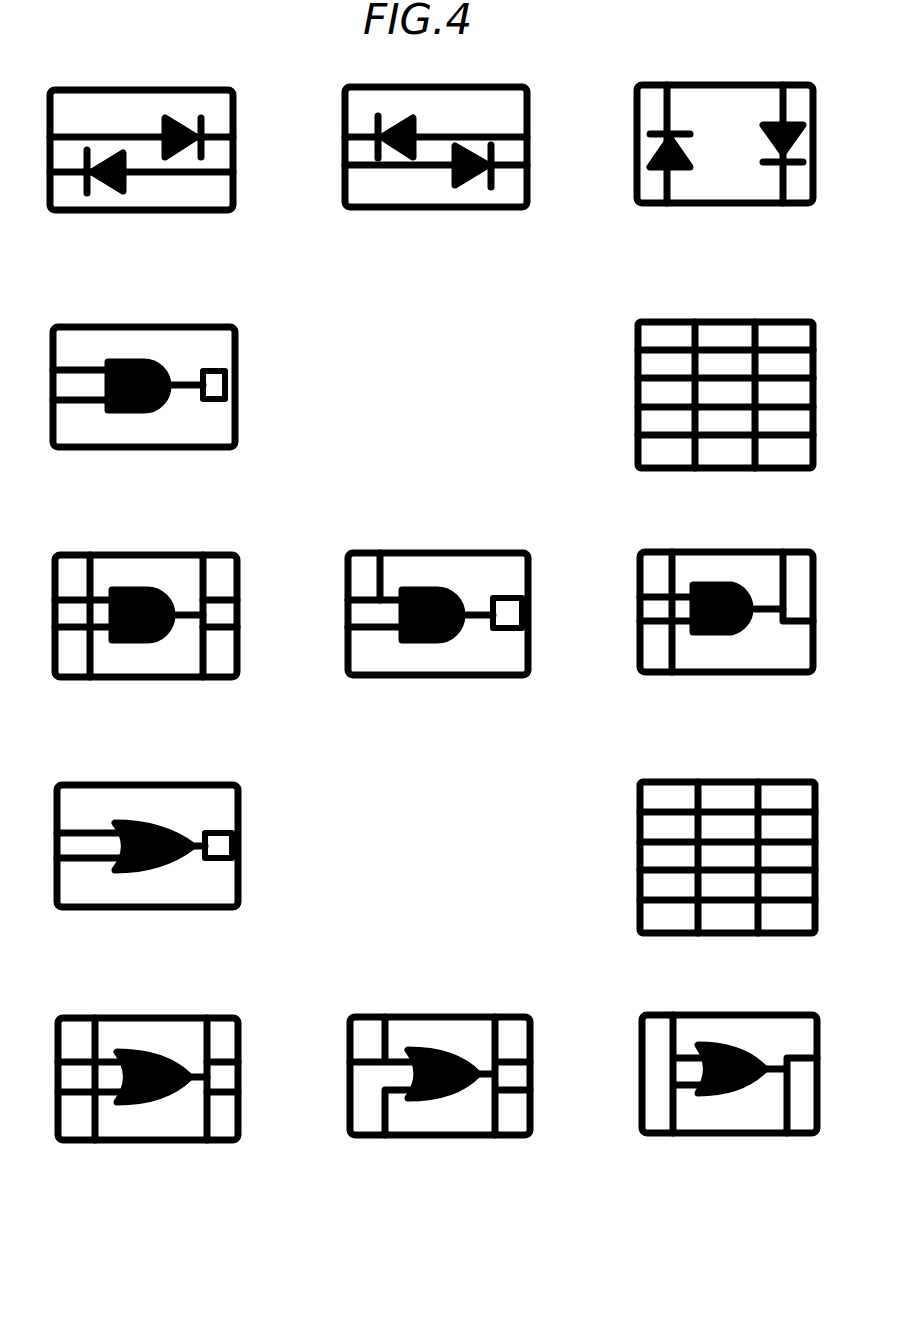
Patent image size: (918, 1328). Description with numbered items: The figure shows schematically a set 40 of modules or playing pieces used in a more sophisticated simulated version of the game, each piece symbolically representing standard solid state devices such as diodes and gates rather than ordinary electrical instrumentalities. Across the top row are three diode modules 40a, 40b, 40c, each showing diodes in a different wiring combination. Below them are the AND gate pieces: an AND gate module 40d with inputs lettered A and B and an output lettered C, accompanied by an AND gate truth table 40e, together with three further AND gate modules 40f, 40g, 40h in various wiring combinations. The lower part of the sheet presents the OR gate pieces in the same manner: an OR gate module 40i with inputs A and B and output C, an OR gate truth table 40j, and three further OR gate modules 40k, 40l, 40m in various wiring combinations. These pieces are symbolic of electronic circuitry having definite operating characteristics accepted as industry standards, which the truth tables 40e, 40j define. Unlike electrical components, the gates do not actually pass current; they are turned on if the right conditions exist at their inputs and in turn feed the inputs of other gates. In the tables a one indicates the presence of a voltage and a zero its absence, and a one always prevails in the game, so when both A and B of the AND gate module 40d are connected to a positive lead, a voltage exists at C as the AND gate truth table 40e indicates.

The set of modules or playing pieces 40 is at (434, 599).
The diode module 40a is at (198, 206).
The diode module 40b is at (483, 196).
The diode module 40c is at (762, 190).
The AND gate module 40d is at (203, 437).
The AND gate truth table 40e is at (787, 468).
The AND gate module 40f is at (192, 660).
The AND gate module 40g is at (480, 657).
The AND gate module 40h is at (770, 655).
The OR gate module 40i is at (208, 900).
The OR gate truth table 40j is at (781, 935).
The OR gate module 40k is at (218, 1123).
The OR gate module 40l is at (480, 1118).
The OR gate module 40m is at (793, 1123).